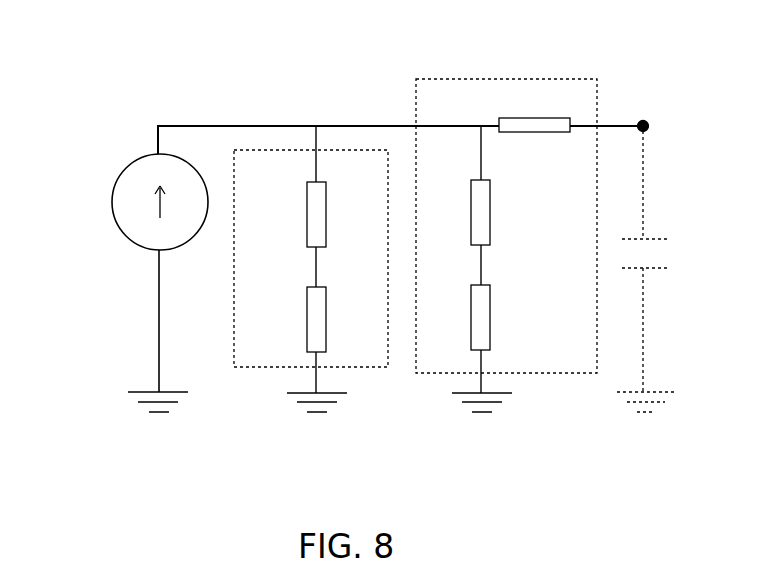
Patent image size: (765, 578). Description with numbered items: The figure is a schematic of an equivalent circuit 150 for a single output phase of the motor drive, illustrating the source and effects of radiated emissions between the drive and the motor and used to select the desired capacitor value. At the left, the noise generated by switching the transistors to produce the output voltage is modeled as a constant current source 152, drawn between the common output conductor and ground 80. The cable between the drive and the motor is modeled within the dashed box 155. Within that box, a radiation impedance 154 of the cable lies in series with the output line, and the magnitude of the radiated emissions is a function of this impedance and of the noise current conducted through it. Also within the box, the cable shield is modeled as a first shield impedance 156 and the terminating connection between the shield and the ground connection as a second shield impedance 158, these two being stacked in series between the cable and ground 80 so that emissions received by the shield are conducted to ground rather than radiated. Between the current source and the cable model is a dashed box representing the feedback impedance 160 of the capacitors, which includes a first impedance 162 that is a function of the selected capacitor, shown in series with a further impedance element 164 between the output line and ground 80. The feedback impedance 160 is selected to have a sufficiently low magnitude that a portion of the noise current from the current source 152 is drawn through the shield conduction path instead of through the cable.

The equivalent circuit 150 is at (112, 124).
The constant current source 152 is at (115, 222).
The radiation impedance 154 is at (511, 118).
The box 155 is at (450, 79).
The first shield impedance 156 is at (490, 221).
The second shield impedance 158 is at (490, 334).
The feedback impedance 160 is at (234, 228).
The first impedance 162 is at (326, 225).
The resistor 164 is at (326, 328).
The ground 80 is at (156, 417).